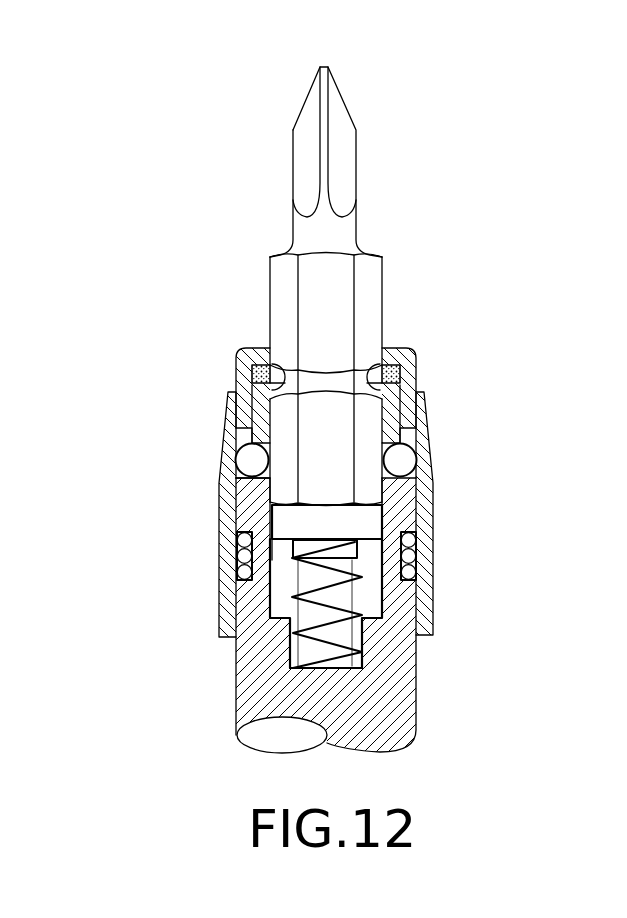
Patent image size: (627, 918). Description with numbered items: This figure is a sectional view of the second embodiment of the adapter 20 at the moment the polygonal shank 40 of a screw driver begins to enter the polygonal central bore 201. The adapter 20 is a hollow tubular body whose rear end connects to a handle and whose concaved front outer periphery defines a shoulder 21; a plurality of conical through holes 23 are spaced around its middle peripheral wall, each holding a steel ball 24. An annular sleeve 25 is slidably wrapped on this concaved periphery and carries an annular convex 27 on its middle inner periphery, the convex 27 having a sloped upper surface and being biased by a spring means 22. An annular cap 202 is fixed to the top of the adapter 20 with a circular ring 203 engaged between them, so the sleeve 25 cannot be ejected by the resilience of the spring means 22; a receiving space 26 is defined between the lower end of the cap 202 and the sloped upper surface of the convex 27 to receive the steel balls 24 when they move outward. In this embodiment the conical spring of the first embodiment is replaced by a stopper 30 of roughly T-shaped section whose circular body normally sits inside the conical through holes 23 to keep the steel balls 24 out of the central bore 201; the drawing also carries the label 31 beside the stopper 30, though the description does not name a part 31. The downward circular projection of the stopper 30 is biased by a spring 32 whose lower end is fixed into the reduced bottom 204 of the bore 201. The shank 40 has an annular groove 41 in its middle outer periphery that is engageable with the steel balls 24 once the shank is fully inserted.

The adapter 20 is at (388, 702).
The shoulder 21 is at (414, 585).
The spring means 22 is at (413, 570).
The conical through holes 23 is at (250, 483).
The steel balls 24 is at (393, 463).
The annular sleeve 25 is at (430, 492).
The receiving space 26 is at (413, 440).
The annular convex 27 is at (405, 518).
The stopper 30 is at (258, 543).
The seat 31 is at (283, 532).
The spring 32 is at (300, 647).
The polygonal shank 40 is at (368, 296).
The annular groove 41 is at (265, 374).
The polygonal central bore 201 is at (262, 610).
The annular cap 202 is at (416, 370).
The circular ring 203 is at (416, 354).
The reduced bottom 204 is at (347, 662).